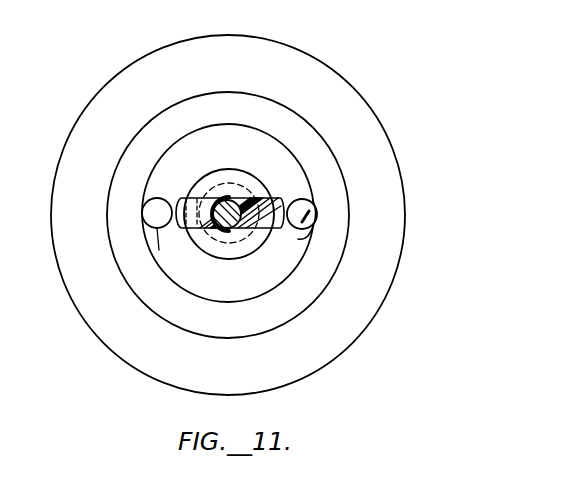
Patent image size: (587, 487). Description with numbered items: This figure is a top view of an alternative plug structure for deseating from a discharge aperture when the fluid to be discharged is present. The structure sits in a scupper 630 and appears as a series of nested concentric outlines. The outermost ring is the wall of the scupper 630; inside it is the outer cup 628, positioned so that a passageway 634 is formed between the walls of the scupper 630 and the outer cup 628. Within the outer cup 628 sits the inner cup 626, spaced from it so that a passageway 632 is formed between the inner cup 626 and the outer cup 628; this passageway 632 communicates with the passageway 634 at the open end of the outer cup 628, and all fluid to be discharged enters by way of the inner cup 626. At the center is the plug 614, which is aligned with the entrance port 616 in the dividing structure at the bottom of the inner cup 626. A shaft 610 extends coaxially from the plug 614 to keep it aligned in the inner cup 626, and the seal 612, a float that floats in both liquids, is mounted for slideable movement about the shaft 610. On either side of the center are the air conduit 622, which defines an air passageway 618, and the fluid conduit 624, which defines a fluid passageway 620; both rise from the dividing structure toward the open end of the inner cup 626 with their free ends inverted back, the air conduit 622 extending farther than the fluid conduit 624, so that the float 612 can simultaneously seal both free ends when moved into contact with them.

The shaft 610 is at (237, 197).
The seal 612 is at (178, 196).
The plug 614 is at (222, 259).
The entrance port 616 is at (216, 185).
The air passageway 618 is at (313, 202).
The fluid passageway 620 is at (150, 210).
The air conduit 622 is at (300, 239).
The fluid conduit 624 is at (159, 250).
The inner cup 626 is at (207, 300).
The outer cup 628 is at (348, 229).
The scupper 630 is at (387, 133).
The passageway 632 is at (282, 308).
The passageway 634 is at (366, 308).